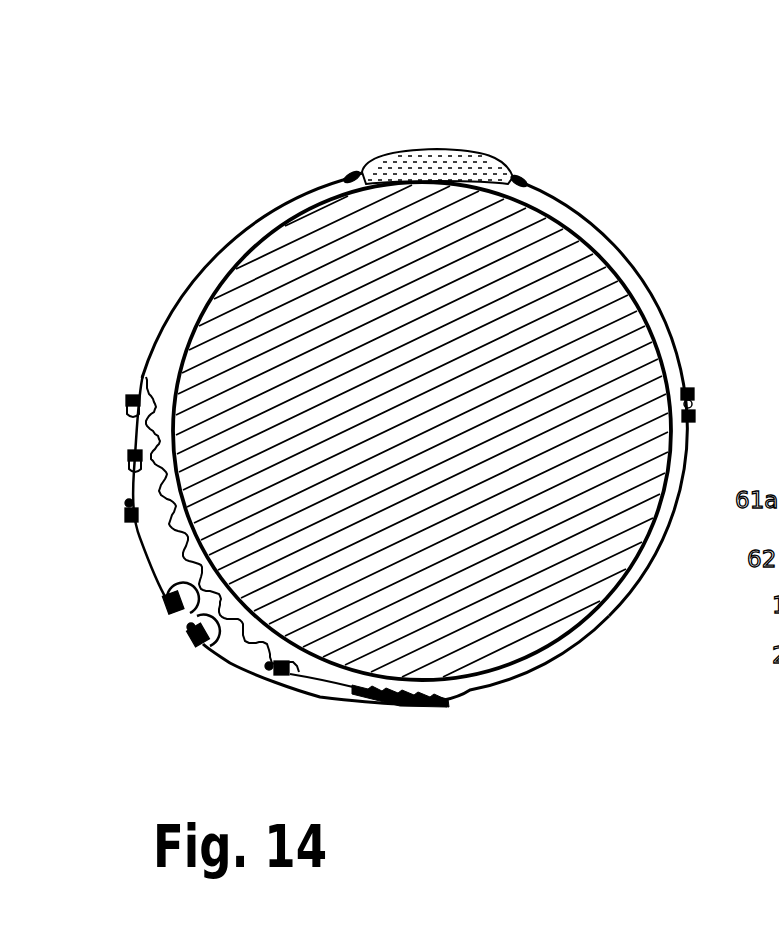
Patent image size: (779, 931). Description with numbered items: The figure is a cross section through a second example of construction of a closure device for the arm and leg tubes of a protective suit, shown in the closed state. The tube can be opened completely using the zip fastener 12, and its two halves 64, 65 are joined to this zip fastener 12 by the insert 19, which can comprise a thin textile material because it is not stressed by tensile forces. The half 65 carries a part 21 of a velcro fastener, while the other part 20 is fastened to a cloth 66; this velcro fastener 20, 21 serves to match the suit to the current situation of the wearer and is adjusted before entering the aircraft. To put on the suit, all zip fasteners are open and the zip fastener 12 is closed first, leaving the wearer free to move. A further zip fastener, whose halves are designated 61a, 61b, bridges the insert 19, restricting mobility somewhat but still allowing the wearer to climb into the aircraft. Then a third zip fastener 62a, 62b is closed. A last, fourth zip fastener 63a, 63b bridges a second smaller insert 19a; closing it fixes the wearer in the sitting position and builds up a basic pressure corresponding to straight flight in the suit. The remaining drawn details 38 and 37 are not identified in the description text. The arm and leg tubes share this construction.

The pad 38 is at (427, 150).
The half 64 is at (197, 277).
The half 65 is at (532, 674).
The band 37 is at (617, 614).
The zip fastener 12 is at (692, 409).
The insert 19 is at (163, 486).
The second smaller insert 19a is at (196, 625).
The zip fastener half 62a is at (130, 397).
The zip fastener half 61a is at (130, 454).
The zip fastener half 62b is at (127, 521).
The zip fastener half 63a is at (165, 603).
The zip fastener half 63b is at (195, 642).
The cloth 66 is at (275, 676).
The zip fastener half 61b is at (285, 680).
The velcro fastener part 20 is at (398, 704).
The velcro fastener part 21 is at (446, 703).